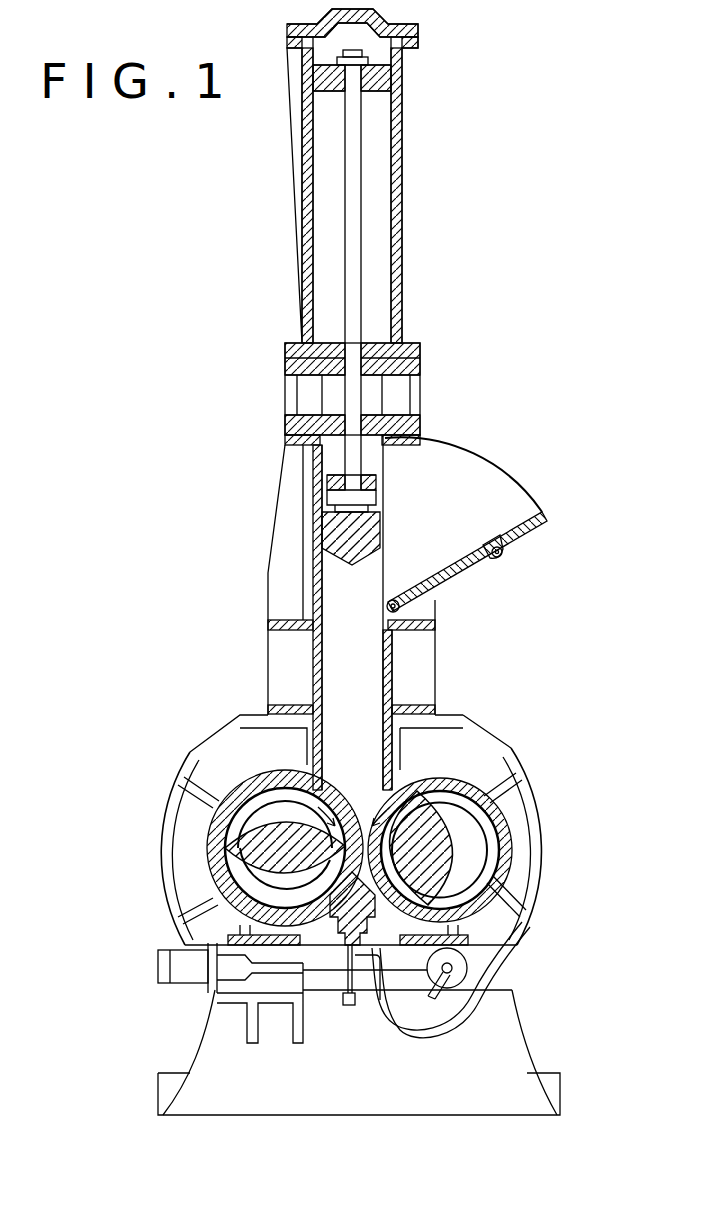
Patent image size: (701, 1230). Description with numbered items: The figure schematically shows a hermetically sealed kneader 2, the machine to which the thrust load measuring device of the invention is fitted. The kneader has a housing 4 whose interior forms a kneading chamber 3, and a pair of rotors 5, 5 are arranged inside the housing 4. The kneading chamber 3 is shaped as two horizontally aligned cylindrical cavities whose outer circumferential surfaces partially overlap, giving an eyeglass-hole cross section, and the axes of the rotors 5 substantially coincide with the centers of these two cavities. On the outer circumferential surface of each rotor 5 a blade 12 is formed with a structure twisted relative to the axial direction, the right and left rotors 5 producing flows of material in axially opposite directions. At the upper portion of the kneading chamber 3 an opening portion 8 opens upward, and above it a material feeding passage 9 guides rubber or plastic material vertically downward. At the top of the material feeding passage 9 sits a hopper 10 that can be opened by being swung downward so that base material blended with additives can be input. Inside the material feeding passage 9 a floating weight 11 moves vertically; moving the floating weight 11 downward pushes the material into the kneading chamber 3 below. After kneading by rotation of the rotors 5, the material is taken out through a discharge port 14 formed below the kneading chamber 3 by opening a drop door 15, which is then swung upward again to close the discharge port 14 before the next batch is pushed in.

The hermetically sealed kneader 2 is at (553, 252).
The kneading chamber 3 is at (472, 842).
The housing 4 is at (507, 752).
The rotor 5 is at (470, 870).
The opening portion 8 is at (330, 803).
The material feeding passage 9 is at (377, 664).
The hopper 10 is at (530, 527).
The floating weight 11 is at (365, 482).
The blade 12 is at (432, 790).
The discharge port 14 is at (347, 935).
The drop door 15 is at (380, 938).